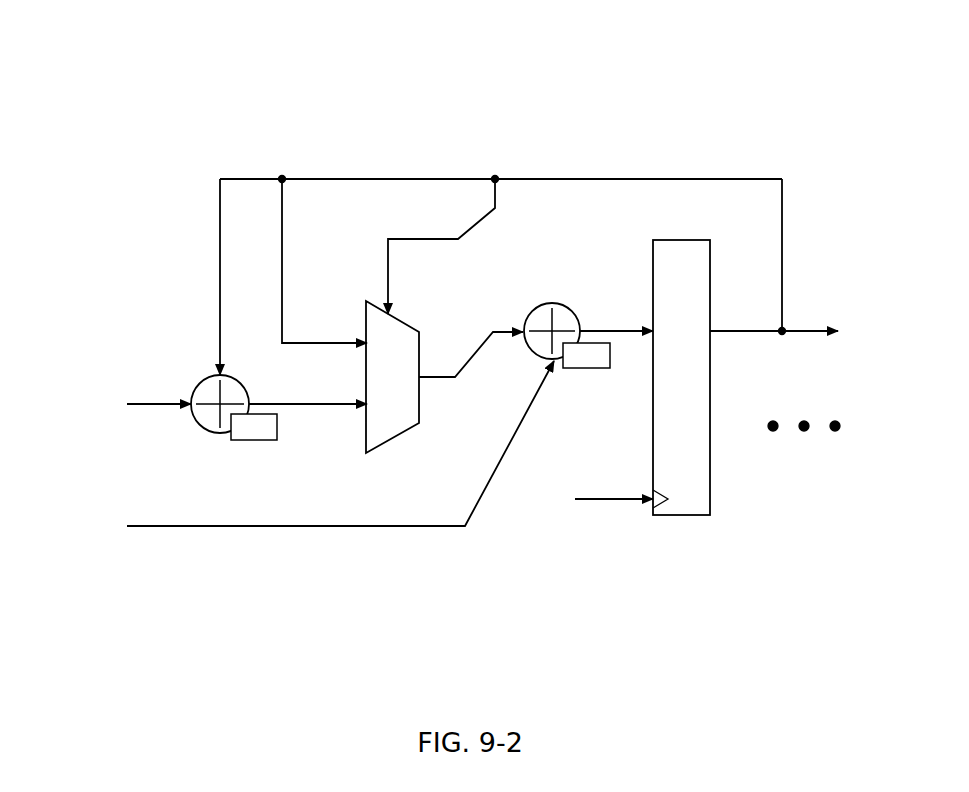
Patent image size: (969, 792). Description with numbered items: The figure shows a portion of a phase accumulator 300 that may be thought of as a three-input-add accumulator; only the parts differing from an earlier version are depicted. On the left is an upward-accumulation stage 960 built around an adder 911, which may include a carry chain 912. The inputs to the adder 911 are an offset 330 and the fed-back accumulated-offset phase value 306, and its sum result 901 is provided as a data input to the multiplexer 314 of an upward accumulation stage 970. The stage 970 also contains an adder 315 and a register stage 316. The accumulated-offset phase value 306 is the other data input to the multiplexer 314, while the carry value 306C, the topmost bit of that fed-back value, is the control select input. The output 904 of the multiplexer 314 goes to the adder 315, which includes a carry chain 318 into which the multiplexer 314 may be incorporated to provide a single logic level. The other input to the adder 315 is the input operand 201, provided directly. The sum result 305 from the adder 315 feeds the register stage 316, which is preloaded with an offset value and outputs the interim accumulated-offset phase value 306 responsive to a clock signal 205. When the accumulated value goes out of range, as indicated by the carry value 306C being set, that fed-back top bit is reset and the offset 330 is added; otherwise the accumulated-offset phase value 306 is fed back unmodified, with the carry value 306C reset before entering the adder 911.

The phase accumulator 300 is at (760, 47).
The upward accumulation stage 970 is at (353, 143).
The accumulated-offset phase value 306 is at (220, 228).
The carry value 306C is at (495, 209).
The offset 330 is at (127, 403).
The input operand 201 is at (127, 525).
The upward-accumulation stage 960 is at (232, 445).
The adder 911 is at (197, 424).
The carry chain 912 is at (284, 449).
The sum result 901 is at (280, 403).
The multiplexer 314 is at (405, 437).
The output of multiplexer 904 is at (490, 330).
The adder 315 is at (527, 350).
The carry chain 318 is at (610, 372).
The sum result 305 is at (616, 330).
The register stage 316 is at (653, 453).
The clock signal 205 is at (575, 499).